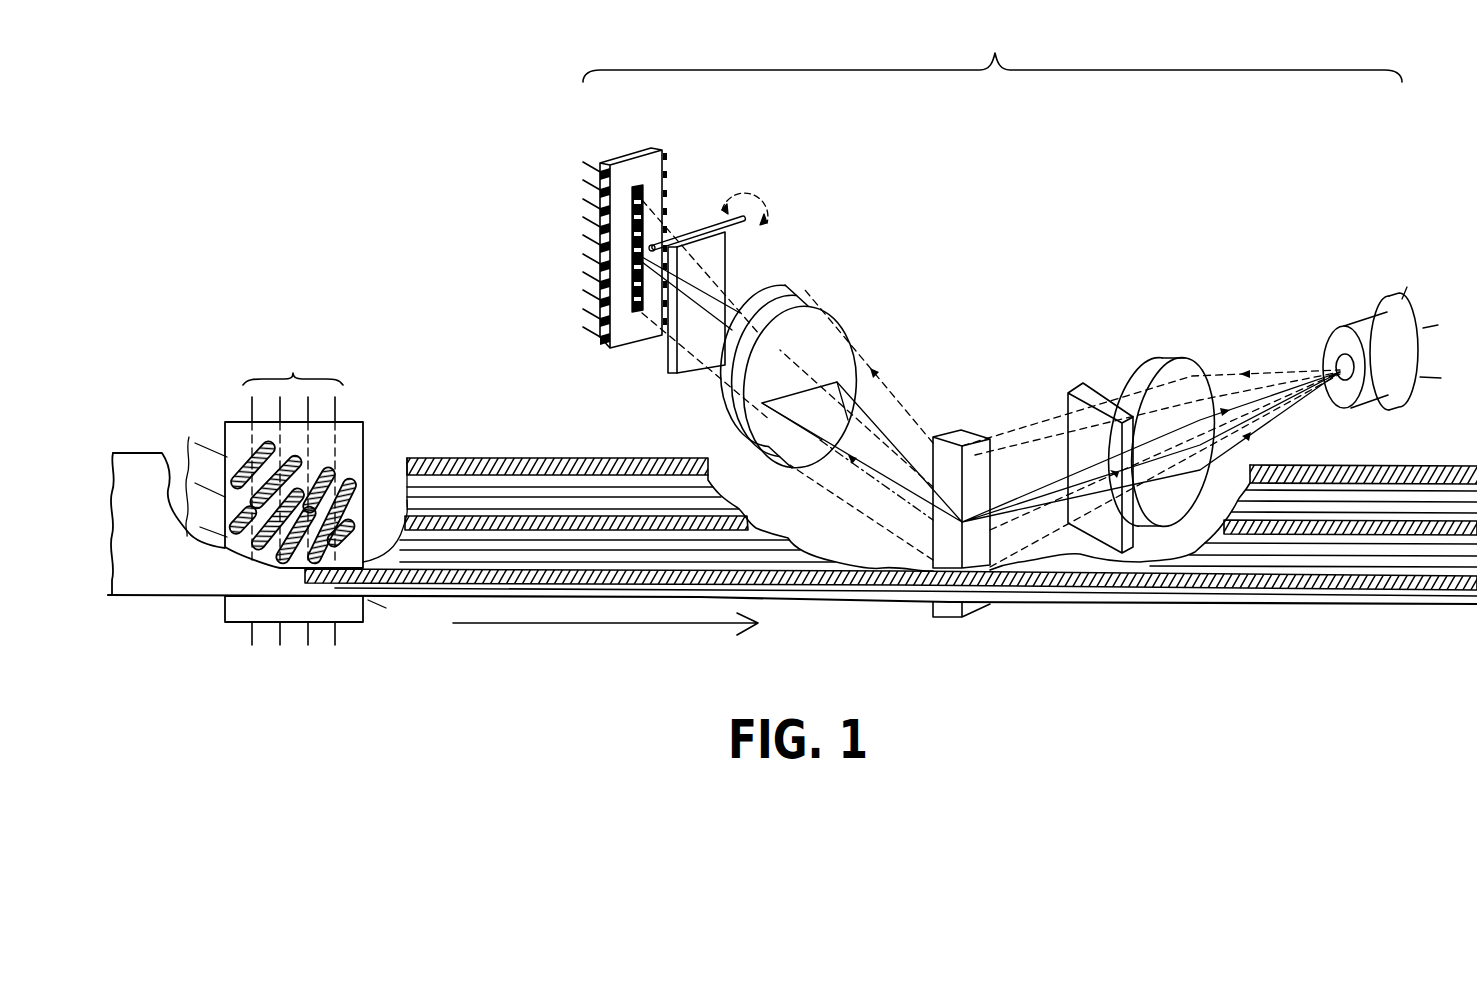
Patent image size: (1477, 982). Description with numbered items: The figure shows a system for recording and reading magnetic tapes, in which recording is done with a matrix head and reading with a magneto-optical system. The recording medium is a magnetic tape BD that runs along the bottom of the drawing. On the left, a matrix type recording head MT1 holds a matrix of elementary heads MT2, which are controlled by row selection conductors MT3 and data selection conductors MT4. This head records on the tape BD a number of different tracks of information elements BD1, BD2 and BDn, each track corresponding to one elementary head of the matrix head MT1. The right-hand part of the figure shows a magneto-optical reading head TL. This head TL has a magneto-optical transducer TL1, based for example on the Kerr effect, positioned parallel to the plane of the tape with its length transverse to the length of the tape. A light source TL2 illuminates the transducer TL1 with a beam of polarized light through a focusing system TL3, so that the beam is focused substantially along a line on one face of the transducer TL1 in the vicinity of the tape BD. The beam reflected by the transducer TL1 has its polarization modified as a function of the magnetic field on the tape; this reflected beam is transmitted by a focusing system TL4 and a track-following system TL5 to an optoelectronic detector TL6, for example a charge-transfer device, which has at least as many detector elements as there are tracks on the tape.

The magneto-optical reading head TL is at (1012, 339).
The magneto-optical transducer TL1 is at (978, 612).
The light source TL2 is at (1329, 322).
The focusing system TL3 is at (1160, 330).
The focusing system TL4 is at (853, 314).
The track-following system TL5 is at (713, 252).
The optoelectronic detector TL6 is at (660, 150).
The matrix type recording head MT1 is at (353, 430).
The elementary heads MT2 is at (342, 475).
The row selection conductors MT3 is at (293, 495).
The data selection conductors MT4 is at (190, 440).
The magnetic tape BD is at (168, 572).
The track of information elements BD1 is at (441, 585).
The track of information elements BD2 is at (505, 578).
The track of information elements BDn is at (528, 457).